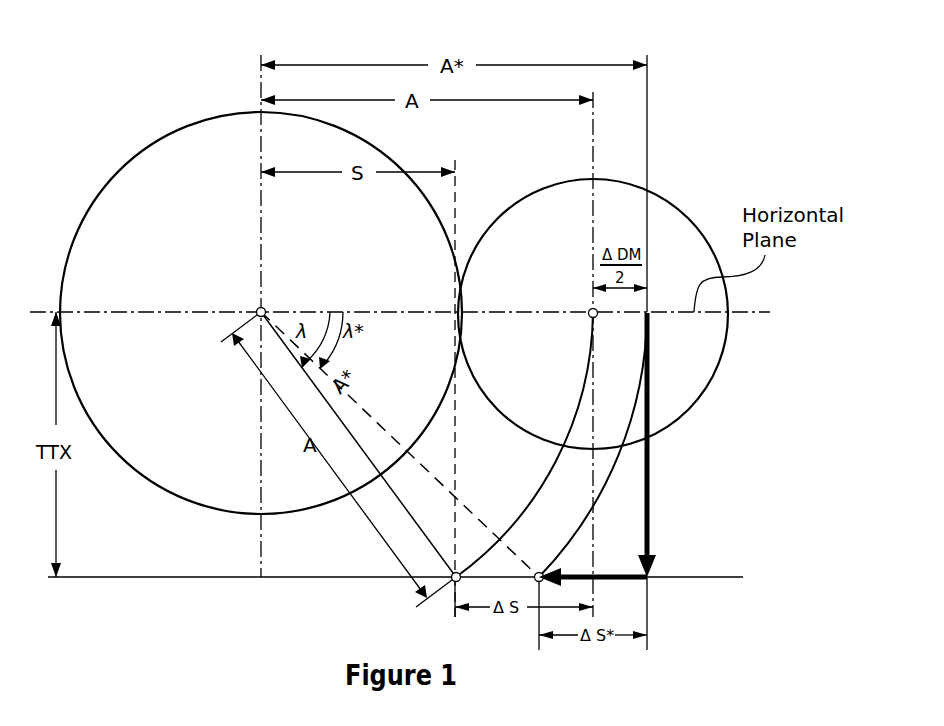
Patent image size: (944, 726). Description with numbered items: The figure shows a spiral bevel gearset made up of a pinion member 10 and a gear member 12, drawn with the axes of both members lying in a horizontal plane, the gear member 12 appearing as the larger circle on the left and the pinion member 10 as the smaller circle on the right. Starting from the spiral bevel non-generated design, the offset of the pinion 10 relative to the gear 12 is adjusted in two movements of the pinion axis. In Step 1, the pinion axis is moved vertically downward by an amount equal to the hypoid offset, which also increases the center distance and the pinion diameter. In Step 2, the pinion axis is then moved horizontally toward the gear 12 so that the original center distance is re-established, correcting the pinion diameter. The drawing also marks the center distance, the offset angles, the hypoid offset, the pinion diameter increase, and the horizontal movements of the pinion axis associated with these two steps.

The pinion member 10 is at (670, 220).
The gear member 12 is at (145, 178).
The Step 1 is at (650, 468).
The Step 2 is at (603, 580).